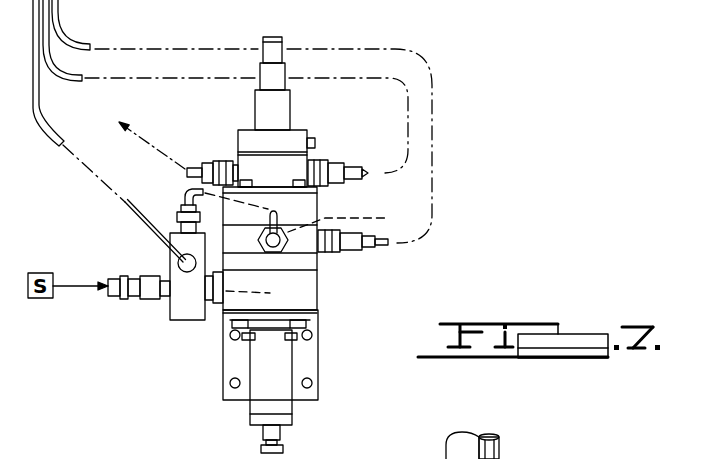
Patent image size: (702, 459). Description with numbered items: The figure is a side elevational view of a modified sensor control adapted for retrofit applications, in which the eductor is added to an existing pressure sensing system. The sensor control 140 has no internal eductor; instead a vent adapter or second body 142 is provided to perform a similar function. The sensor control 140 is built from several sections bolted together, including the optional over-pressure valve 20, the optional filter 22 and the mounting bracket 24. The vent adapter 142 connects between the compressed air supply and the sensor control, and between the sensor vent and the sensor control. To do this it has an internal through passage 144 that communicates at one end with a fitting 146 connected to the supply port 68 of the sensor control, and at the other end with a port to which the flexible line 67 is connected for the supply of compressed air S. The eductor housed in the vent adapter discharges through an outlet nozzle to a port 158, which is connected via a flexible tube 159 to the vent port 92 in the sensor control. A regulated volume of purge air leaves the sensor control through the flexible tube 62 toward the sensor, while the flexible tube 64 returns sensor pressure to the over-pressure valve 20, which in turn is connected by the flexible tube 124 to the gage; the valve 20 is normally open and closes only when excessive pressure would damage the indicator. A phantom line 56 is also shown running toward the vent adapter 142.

The over-pressure valve 20 is at (277, 107).
The filter 22 is at (263, 402).
The mounting bracket 24 is at (312, 363).
The control line/rod 56 is at (147, 224).
The flexible tube 62 is at (380, 250).
The flexible tube 64 is at (365, 172).
The flexible line 67 is at (110, 289).
The supply port 68 is at (262, 289).
The vent port 92 is at (350, 217).
The flexible tube 124 is at (189, 167).
The sensor control 140 is at (330, 281).
The vent adapter 142 is at (185, 307).
The internal through passage 144 is at (199, 293).
The fitting 146 is at (218, 308).
The port 158 is at (172, 224).
The flexible tube 159 is at (192, 185).